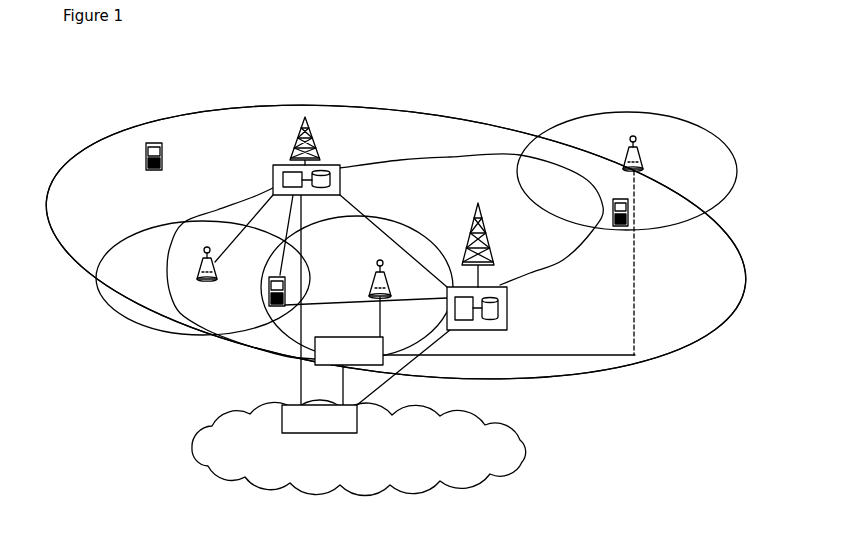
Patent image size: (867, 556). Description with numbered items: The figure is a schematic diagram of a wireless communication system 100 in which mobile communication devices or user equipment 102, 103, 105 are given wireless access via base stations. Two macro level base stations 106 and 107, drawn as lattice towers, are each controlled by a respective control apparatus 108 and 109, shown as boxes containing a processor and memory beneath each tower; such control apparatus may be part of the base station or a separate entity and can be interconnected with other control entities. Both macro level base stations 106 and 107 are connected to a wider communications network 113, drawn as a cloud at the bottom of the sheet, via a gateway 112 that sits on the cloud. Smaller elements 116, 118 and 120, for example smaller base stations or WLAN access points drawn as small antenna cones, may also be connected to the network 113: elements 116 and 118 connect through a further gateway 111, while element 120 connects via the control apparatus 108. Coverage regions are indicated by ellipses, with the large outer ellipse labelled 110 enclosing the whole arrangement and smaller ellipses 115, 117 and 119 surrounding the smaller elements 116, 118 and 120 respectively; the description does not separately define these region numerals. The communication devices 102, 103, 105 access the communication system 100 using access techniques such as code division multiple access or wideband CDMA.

The communication system 100 is at (99, 132).
The mobile communication device 102 is at (147, 169).
The mobile communication device 103 is at (268, 300).
The mobile communication device 105 is at (622, 228).
The macro level base station 106 is at (292, 143).
The macro level base station 107 is at (488, 248).
The control apparatus 108 is at (273, 177).
The control apparatus 109 is at (505, 323).
The network coverage area 110 is at (677, 352).
The gateway 111 is at (316, 355).
The gateway 112 is at (283, 405).
The wider communications network 113 is at (237, 440).
The access point coverage area 115 is at (718, 120).
The smaller element 116 is at (625, 154).
The access point coverage area 117 is at (401, 217).
The smaller element 118 is at (368, 285).
The access point coverage area 119 is at (146, 328).
The smaller element 120 is at (198, 266).